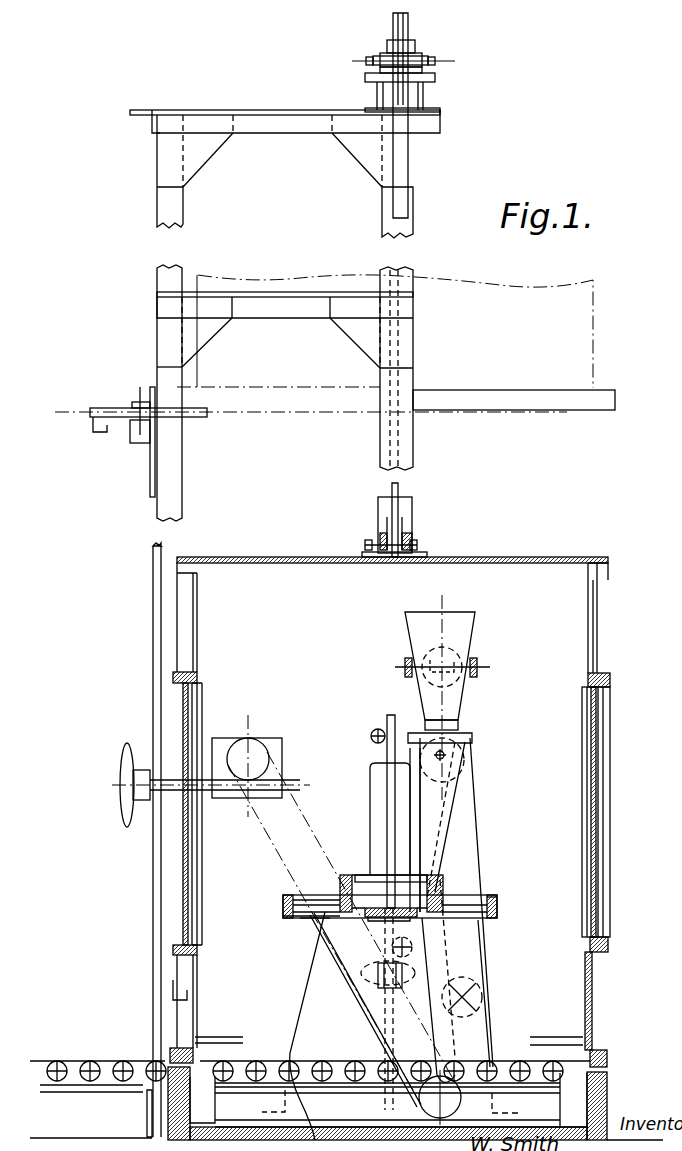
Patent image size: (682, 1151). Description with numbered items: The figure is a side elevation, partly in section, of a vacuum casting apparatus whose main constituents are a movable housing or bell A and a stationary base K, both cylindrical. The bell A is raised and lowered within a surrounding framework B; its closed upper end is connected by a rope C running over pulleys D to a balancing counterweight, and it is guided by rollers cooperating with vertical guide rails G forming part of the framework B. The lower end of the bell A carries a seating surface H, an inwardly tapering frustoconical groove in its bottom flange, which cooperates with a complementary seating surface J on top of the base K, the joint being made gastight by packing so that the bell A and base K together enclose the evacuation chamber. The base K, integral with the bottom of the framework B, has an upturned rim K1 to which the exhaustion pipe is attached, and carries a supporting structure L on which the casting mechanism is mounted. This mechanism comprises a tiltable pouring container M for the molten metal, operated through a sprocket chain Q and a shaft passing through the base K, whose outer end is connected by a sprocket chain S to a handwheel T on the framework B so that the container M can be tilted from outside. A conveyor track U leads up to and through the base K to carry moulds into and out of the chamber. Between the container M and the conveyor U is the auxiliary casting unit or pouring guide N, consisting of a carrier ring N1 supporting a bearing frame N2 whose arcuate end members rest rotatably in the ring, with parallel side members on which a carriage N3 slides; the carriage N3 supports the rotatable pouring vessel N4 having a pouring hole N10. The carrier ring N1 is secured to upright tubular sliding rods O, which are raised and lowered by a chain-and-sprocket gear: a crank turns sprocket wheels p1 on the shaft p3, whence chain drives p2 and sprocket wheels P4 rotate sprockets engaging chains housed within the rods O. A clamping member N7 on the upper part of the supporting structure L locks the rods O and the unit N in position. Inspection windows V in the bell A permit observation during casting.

The movable housing or bell A is at (567, 412).
The surrounding framework B is at (157, 560).
The rope C is at (406, 178).
The pulleys D is at (406, 20).
The vertical guide rails G is at (380, 505).
The pouring container or tiltable receptacle M is at (477, 637).
The inspection windows V is at (186, 712).
The handwheel T is at (120, 808).
The clamping member N7 is at (375, 726).
The upright sliding rods O is at (392, 780).
The sprocket wheels p1 is at (467, 735).
The shaft p3 is at (447, 755).
The chain drives p2 is at (447, 837).
The sprocket chain Q is at (450, 855).
The rotatable pouring vessel or pouring guide N4 is at (335, 872).
The auxiliary casting unit or pouring guide N is at (509, 915).
The bearing frame N2 is at (497, 897).
The carriage N3 is at (318, 885).
The carrier ring N1 is at (283, 915).
The pouring hole or stream passage N10 is at (317, 925).
The supporting structure L is at (482, 952).
The sprocket wheels P4 is at (412, 948).
The sprocket chain S is at (340, 988).
The stationary member or base K is at (293, 1053).
The conveyor track U is at (88, 1060).
The upturned rim K1 is at (165, 1065).
The seating surface H is at (608, 1058).
The complementary seating surface J is at (600, 1075).